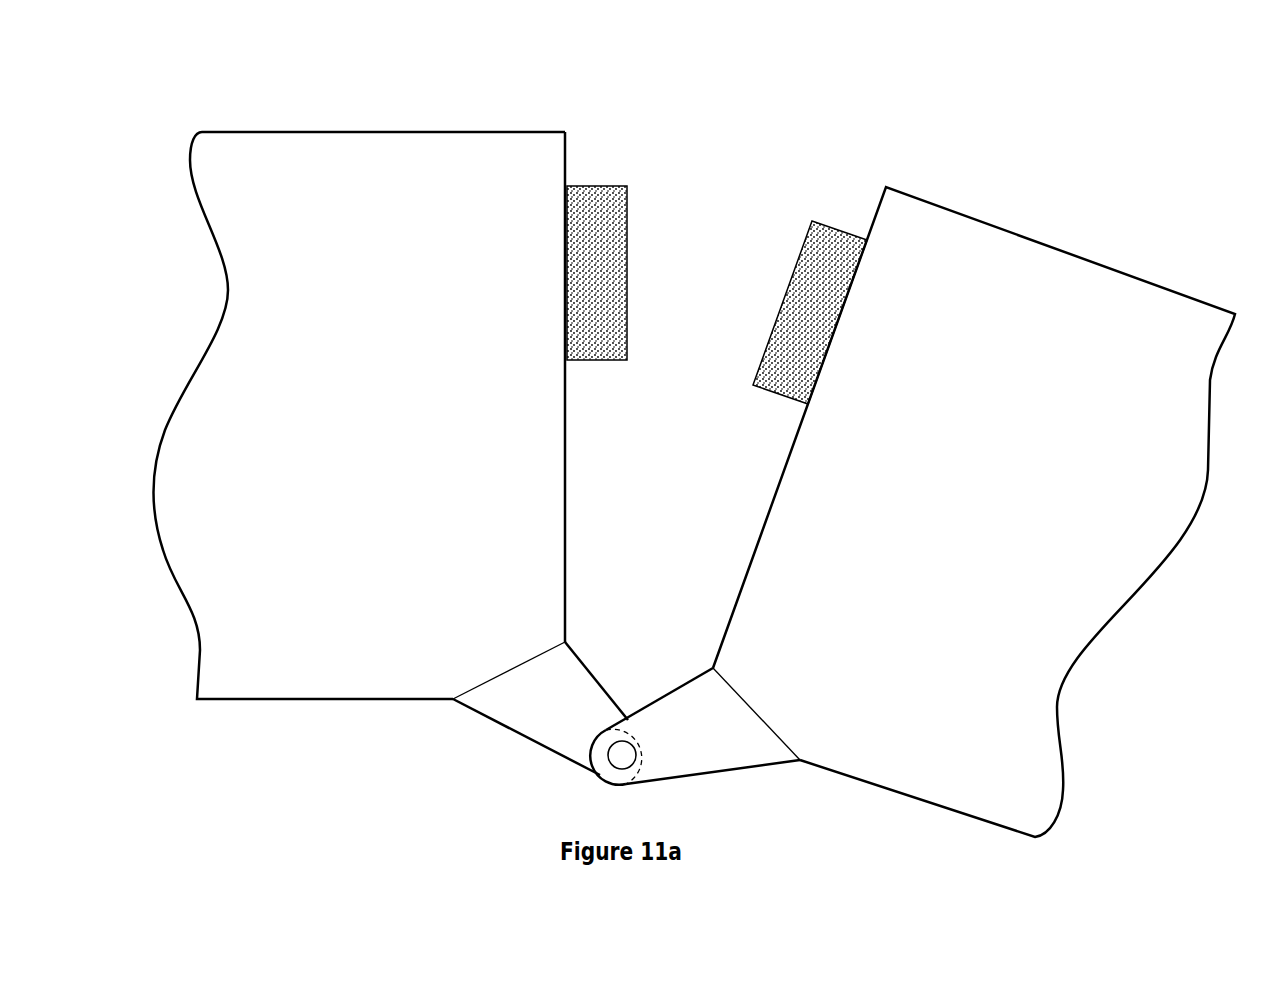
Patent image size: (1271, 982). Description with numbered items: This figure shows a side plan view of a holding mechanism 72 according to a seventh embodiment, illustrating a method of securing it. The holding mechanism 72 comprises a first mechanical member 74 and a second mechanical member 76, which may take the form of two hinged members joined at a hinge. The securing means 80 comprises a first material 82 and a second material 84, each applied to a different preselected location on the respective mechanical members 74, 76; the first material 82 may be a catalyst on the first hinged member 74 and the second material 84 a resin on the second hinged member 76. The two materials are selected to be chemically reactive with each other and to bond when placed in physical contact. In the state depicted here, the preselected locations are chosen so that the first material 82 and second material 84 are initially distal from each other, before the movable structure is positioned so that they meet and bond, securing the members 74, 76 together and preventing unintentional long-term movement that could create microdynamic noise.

The securing means 80 is at (697, 59).
The first material 82 is at (612, 185).
The second material 84 is at (805, 236).
The first mechanical member 74 is at (390, 453).
The second mechanical member 76 is at (920, 512).
The holding mechanism 72 is at (658, 476).